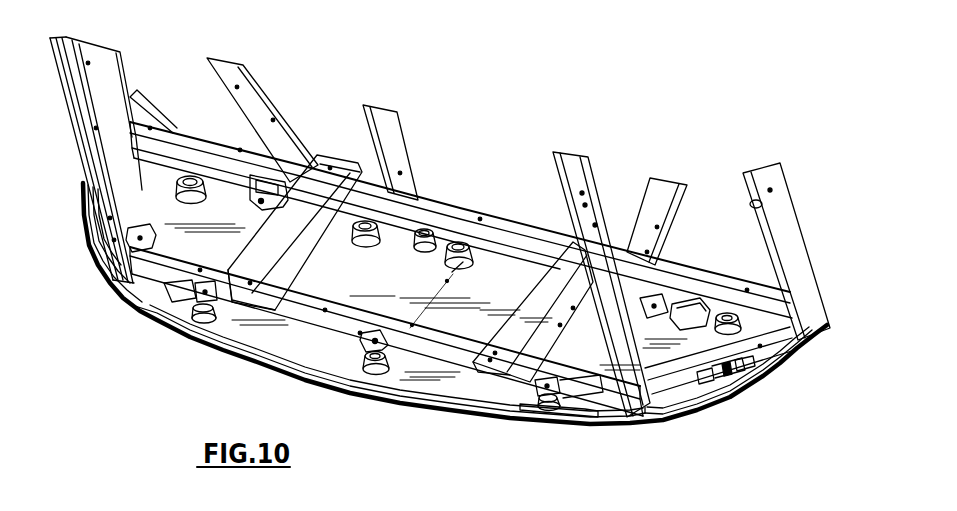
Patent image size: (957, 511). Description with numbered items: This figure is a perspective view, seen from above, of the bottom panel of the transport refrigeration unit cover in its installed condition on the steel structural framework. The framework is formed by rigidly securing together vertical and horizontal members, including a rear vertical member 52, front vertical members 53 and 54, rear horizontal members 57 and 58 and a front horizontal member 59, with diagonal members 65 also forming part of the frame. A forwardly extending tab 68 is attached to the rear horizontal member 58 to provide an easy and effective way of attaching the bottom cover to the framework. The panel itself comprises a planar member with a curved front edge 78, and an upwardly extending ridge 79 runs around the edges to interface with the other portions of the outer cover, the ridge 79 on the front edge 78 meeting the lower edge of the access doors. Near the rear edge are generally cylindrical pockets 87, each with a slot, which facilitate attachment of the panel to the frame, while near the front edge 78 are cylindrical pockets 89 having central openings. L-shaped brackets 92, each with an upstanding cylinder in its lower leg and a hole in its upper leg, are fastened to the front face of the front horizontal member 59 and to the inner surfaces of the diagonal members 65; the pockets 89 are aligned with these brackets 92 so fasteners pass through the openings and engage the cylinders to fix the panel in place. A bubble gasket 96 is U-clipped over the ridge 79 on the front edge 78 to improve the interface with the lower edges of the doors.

The rear vertical member 52 is at (777, 199).
The front vertical member 53 is at (92, 146).
The front vertical member 54 is at (580, 171).
The rear horizontal member 57 is at (113, 63).
The rear horizontal member 58 is at (430, 212).
The front horizontal member 59 is at (321, 317).
The diagonal member 65 is at (673, 398).
The forwardly extending tab 68 is at (250, 176).
The curved front edge 78 is at (570, 418).
The upwardly extending ridge 79 is at (750, 395).
The pocket 87 is at (458, 243).
The pocket 89 is at (377, 371).
The L-shaped bracket 92 is at (363, 352).
The bubble gasket 96 is at (779, 365).